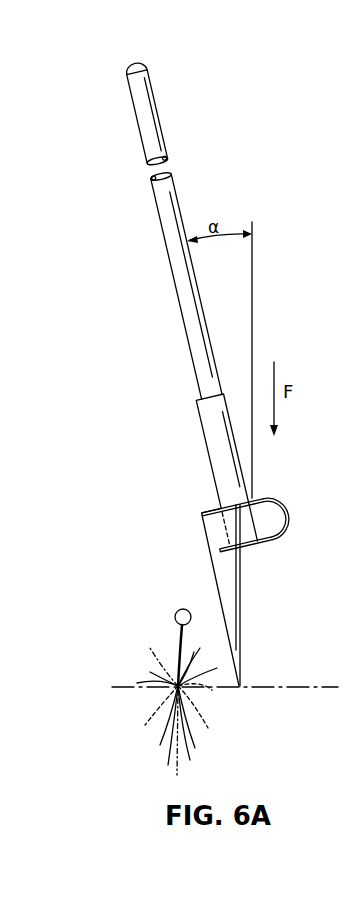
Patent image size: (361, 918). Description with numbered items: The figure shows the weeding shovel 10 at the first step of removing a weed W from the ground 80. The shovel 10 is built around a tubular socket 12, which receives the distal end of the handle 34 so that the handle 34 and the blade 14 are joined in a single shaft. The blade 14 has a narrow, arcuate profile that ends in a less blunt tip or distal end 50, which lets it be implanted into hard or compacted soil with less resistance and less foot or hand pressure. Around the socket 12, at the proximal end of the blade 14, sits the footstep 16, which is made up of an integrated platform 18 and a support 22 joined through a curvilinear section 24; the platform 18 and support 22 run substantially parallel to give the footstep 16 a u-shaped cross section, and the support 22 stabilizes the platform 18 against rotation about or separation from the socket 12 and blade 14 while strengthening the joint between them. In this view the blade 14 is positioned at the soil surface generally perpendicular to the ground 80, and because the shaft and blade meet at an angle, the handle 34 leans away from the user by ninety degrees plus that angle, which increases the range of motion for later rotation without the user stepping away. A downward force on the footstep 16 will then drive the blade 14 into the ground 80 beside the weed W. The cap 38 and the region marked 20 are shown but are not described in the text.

The shovel 10 is at (88, 162).
The tubular socket 12 is at (204, 437).
The blade 14 is at (217, 592).
The footstep 16 is at (280, 508).
The platform 18 is at (272, 498).
The slot 20 is at (203, 497).
The support 22 is at (259, 548).
The curvilinear section 24 is at (293, 514).
The handle 34 is at (178, 203).
The cap 38 is at (155, 97).
The distal end 50 is at (241, 642).
The ground 80 is at (112, 742).
The weed W is at (153, 652).